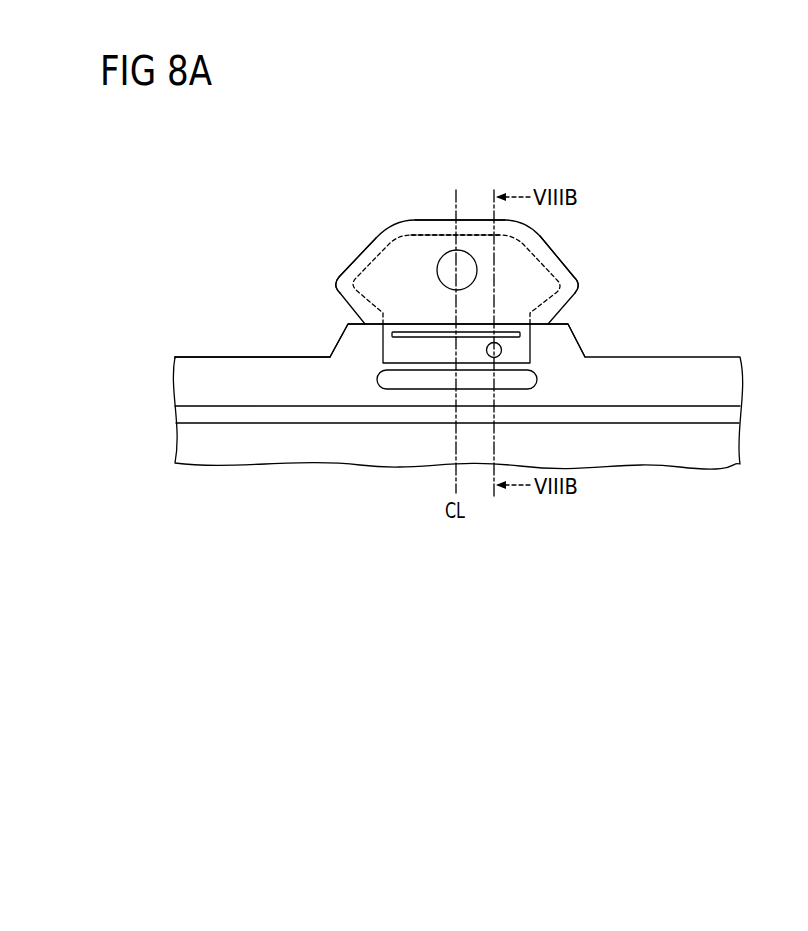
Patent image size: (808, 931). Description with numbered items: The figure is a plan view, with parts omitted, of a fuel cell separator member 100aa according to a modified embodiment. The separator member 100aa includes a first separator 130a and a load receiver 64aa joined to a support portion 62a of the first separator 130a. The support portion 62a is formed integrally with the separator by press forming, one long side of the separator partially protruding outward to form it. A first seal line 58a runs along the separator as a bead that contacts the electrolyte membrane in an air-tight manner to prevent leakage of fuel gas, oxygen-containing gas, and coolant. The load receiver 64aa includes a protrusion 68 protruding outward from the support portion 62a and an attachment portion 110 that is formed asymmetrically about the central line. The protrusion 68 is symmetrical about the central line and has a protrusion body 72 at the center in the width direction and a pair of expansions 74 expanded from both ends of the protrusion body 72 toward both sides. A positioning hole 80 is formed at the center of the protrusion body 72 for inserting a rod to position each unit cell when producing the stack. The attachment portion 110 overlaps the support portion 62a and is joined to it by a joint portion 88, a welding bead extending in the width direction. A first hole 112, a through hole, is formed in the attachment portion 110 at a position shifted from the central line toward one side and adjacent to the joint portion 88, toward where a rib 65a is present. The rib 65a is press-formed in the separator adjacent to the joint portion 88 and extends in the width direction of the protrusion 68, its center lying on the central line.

The separator member 100aa is at (210, 182).
The first separator 130a is at (172, 354).
The first seal line 58a is at (242, 415).
The support portion 62a is at (347, 340).
The load receiver 64aa is at (559, 233).
The rib 65a is at (533, 382).
The protrusion 68 is at (408, 220).
The protrusion body 72 is at (436, 229).
The expansions 74 is at (345, 266).
The positioning hole 80 is at (443, 272).
The joint portion 88 is at (407, 331).
The attachment portion 110 is at (420, 350).
The first hole 112 is at (502, 348).